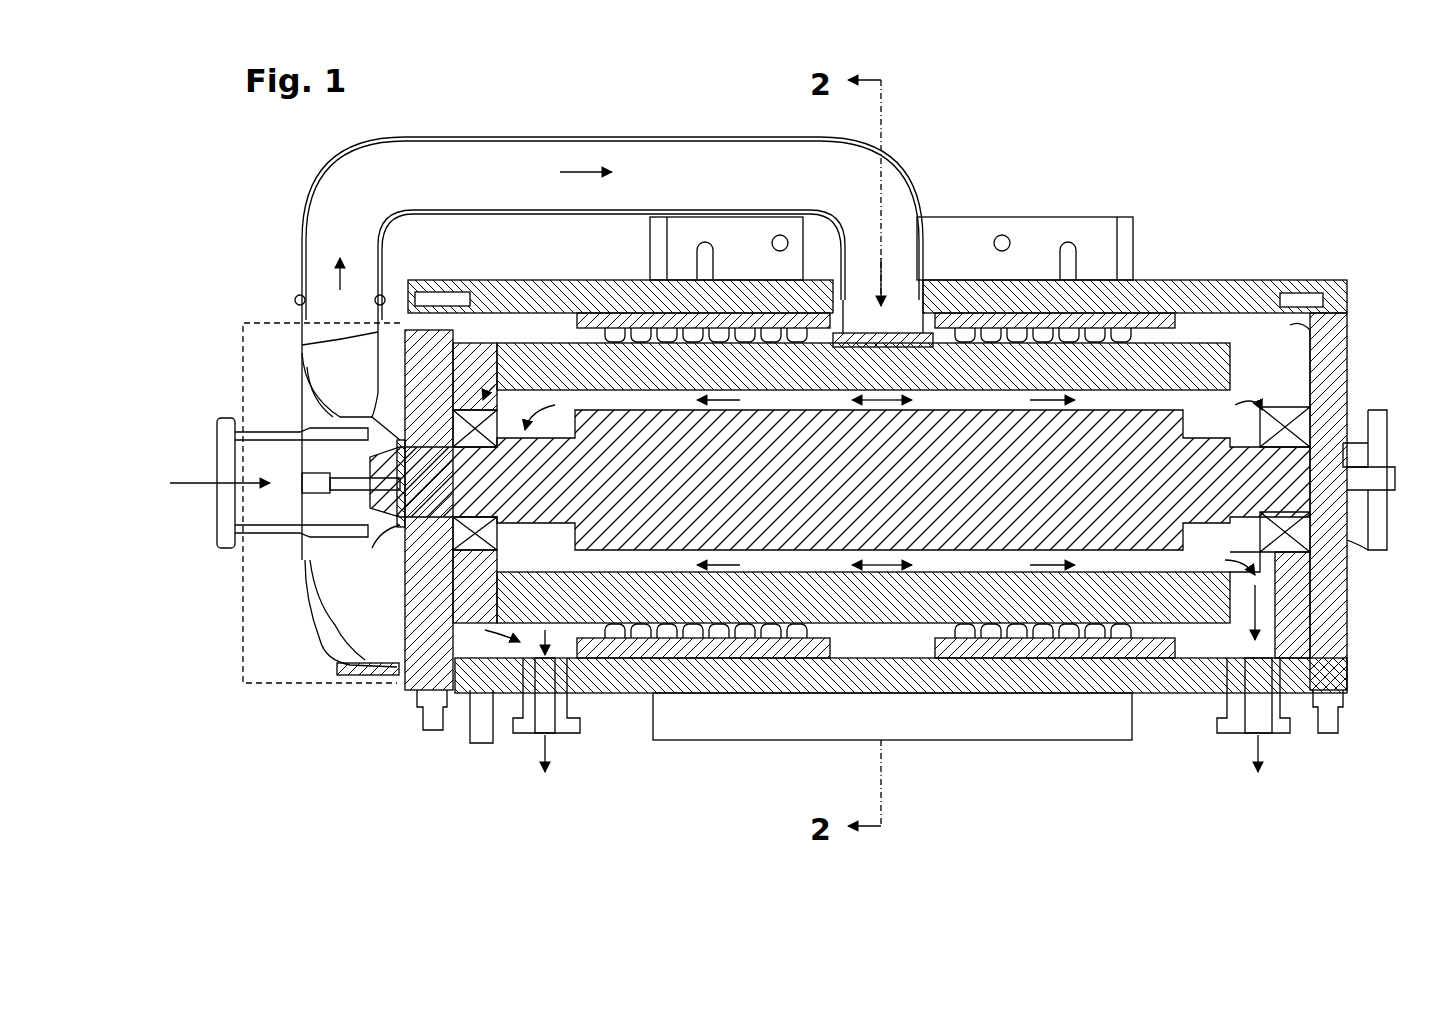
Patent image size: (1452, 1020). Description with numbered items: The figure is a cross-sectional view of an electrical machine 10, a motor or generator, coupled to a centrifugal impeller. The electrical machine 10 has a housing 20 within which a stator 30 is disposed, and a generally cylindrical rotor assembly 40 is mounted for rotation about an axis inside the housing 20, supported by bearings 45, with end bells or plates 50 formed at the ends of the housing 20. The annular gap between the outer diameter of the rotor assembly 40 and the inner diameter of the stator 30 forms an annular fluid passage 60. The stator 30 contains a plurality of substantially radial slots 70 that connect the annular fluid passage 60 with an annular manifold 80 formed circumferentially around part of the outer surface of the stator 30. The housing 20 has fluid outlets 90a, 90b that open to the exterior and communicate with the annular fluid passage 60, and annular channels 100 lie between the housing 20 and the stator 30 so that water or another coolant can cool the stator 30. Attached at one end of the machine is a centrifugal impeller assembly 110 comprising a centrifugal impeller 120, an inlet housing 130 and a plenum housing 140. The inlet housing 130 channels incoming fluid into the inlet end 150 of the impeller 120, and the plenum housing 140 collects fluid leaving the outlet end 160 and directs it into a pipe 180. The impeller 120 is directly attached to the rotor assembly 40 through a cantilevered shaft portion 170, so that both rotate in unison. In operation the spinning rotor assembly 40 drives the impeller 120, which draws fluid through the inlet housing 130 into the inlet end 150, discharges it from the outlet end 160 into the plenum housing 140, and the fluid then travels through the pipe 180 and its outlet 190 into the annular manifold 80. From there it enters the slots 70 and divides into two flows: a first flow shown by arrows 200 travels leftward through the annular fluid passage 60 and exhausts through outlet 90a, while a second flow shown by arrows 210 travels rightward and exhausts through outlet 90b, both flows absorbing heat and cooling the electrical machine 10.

The electrical machine 10 is at (1133, 789).
The housing 20 is at (627, 672).
The stator 30 is at (1300, 585).
The rotor assembly 40 is at (1137, 507).
The bearings 45 is at (480, 388).
The end bells or plates 50 is at (1350, 340).
The annular fluid passage 60 is at (800, 215).
The slots 70 is at (900, 345).
The annular manifold 80 is at (1008, 335).
The fluid outlet 90a is at (530, 742).
The fluid outlet 90b is at (1268, 742).
The annular channels 100 is at (1110, 335).
The centrifugal impeller assembly 110 is at (243, 590).
The centrifugal impeller 120 is at (365, 410).
The inlet housing 130 is at (217, 510).
The plenum housing 140 is at (345, 633).
The inlet end 150 is at (340, 535).
The outlet end 160 is at (370, 372).
The shaft portion 170 is at (430, 670).
The pipe 180 is at (535, 137).
The outlet 190 is at (893, 335).
The arrows 200 is at (715, 345).
The arrows 210 is at (1058, 335).